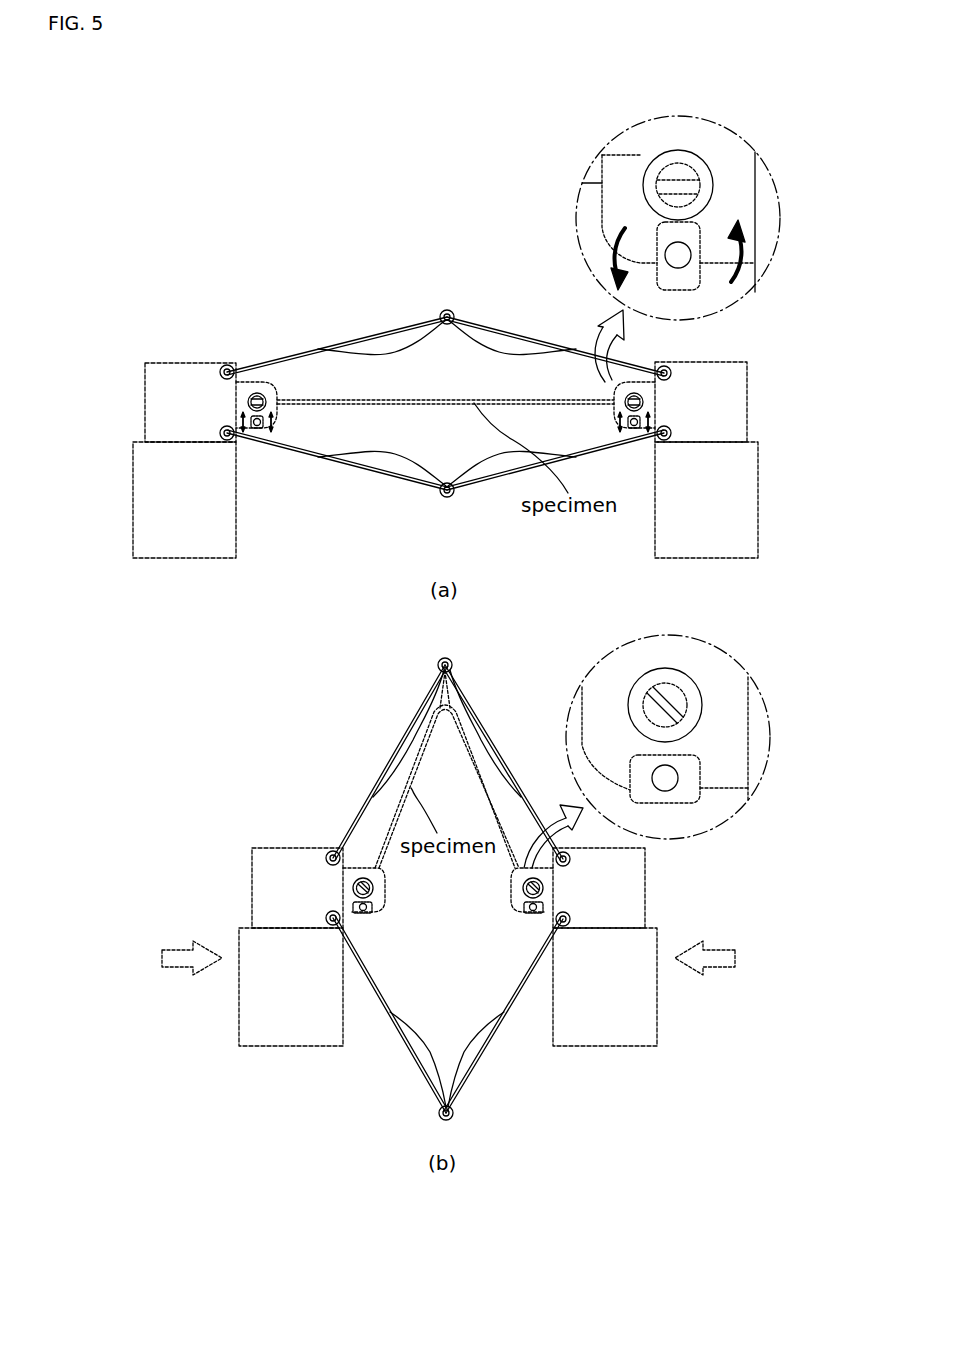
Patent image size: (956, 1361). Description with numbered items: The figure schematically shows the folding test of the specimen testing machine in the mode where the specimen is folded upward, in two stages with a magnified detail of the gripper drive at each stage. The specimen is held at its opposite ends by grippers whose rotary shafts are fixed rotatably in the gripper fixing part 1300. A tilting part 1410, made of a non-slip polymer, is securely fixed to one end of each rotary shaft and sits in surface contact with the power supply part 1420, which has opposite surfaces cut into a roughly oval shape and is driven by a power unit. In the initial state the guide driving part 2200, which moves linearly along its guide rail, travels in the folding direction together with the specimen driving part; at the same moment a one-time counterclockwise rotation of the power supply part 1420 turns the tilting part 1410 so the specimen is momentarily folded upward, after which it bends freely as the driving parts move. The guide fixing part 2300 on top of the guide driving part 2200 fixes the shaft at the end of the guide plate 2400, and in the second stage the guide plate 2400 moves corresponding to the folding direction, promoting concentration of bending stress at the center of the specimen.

The gripper fixing part 1300 is at (257, 387).
The tilting part 1410 is at (658, 162).
The power supply part 1420 is at (692, 228).
The guide driving part 2200 is at (148, 495).
The guide fixing part 2300 is at (153, 395).
The guide plate 2400 is at (328, 350).